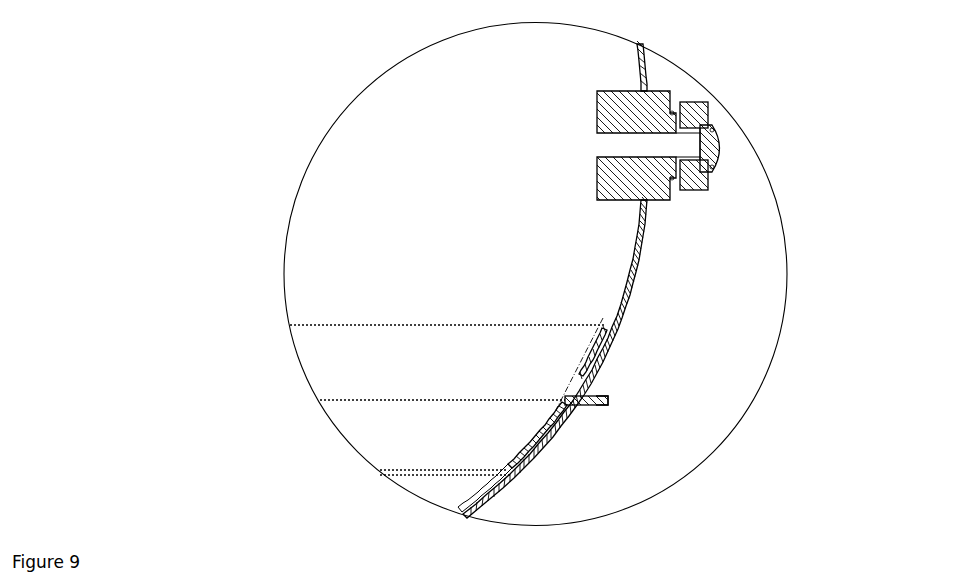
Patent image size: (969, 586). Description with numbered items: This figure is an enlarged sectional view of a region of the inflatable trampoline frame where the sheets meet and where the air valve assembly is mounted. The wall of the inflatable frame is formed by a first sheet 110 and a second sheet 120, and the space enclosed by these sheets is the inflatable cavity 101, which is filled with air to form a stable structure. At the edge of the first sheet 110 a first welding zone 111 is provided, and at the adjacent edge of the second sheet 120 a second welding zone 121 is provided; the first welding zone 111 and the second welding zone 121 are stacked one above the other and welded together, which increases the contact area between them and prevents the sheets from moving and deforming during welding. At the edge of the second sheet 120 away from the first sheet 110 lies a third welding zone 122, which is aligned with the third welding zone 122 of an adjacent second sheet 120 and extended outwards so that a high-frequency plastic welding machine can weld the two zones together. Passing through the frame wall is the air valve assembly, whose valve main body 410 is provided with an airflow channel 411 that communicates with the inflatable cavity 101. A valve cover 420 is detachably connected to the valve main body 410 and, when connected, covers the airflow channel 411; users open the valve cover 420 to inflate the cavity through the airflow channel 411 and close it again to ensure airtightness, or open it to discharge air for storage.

The inflatable cavity 101 is at (378, 249).
The first sheet 110 is at (625, 298).
The first welding zone 111 is at (607, 347).
The second sheet 120 is at (555, 409).
The second welding zone 121 is at (525, 448).
The third welding zone 122 is at (602, 407).
The valve main body 410 is at (636, 112).
The airflow channel 411 is at (672, 147).
The valve cover 420 is at (697, 178).